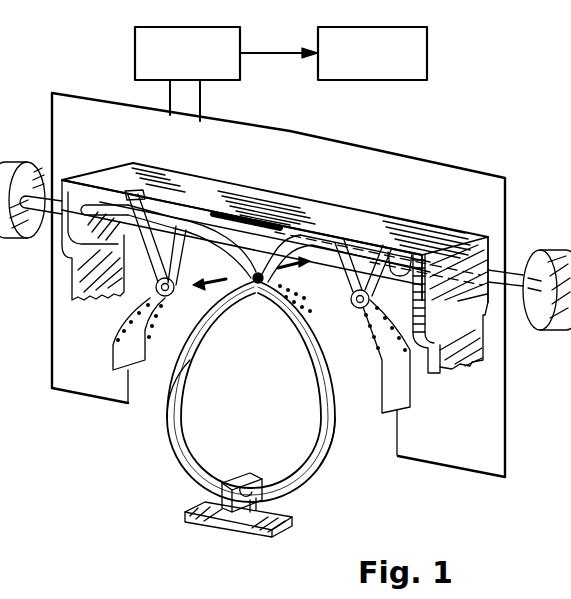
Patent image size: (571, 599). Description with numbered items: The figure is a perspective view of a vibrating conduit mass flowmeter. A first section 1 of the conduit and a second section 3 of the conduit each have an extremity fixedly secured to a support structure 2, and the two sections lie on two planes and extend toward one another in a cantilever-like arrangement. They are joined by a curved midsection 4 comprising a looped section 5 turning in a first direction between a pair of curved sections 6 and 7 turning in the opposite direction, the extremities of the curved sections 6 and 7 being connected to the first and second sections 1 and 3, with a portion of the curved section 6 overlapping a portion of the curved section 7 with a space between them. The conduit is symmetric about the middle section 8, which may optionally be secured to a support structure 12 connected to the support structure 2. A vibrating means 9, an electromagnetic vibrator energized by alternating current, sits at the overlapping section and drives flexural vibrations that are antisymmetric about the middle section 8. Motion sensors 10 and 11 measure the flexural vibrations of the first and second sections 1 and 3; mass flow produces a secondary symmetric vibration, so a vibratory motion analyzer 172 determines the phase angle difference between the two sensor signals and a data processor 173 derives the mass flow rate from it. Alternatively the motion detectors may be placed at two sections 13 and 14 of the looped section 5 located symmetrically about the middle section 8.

The first section of the conduit 1 is at (113, 195).
The support structure 2 is at (173, 190).
The second section of the conduit 3 is at (404, 272).
The curved midsection 4 is at (200, 343).
The looped section 5 is at (302, 480).
The curved section 6 is at (250, 247).
The curved section 7 is at (260, 292).
The middle section 8 is at (240, 520).
The vibrating means 9 is at (258, 243).
The motion sensor 10 is at (194, 205).
The motion sensor 11 is at (326, 270).
The support structure 12 is at (212, 522).
The section of the looped section 13 is at (175, 402).
The section of the looped section 14 is at (328, 418).
The vibratory motion analyzer 172 is at (135, 56).
The data processor 173 is at (427, 50).